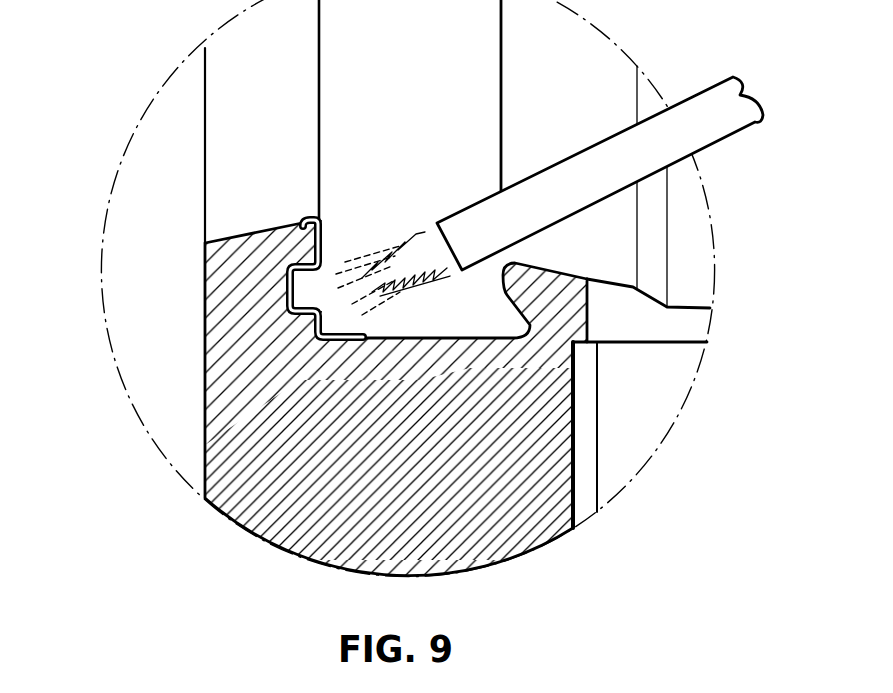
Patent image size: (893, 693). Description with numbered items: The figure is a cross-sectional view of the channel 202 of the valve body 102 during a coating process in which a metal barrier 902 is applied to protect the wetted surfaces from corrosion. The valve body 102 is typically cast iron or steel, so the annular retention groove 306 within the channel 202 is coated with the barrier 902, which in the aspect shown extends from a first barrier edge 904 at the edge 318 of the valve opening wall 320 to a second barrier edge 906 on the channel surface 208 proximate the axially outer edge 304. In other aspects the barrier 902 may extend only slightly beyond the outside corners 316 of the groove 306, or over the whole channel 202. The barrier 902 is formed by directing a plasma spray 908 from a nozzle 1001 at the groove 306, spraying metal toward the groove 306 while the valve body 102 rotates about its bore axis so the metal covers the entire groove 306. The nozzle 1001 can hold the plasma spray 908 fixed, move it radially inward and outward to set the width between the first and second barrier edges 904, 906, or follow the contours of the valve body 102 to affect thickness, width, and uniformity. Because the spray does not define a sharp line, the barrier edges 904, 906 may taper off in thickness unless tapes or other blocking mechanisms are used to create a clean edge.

The valve body 102 is at (537, 360).
The channel 202 is at (497, 320).
The channel surface 208 is at (442, 335).
The axially outer edge 304 is at (320, 323).
The groove 306 is at (306, 287).
The outside corners 316 is at (323, 268).
The edge 318 is at (319, 214).
The valve opening wall 320 is at (218, 234).
The barrier 902 is at (326, 240).
The first barrier edge 904 is at (298, 220).
The second barrier edge 906 is at (372, 340).
The plasma spray 908 is at (414, 243).
The nozzle 1001 is at (487, 240).